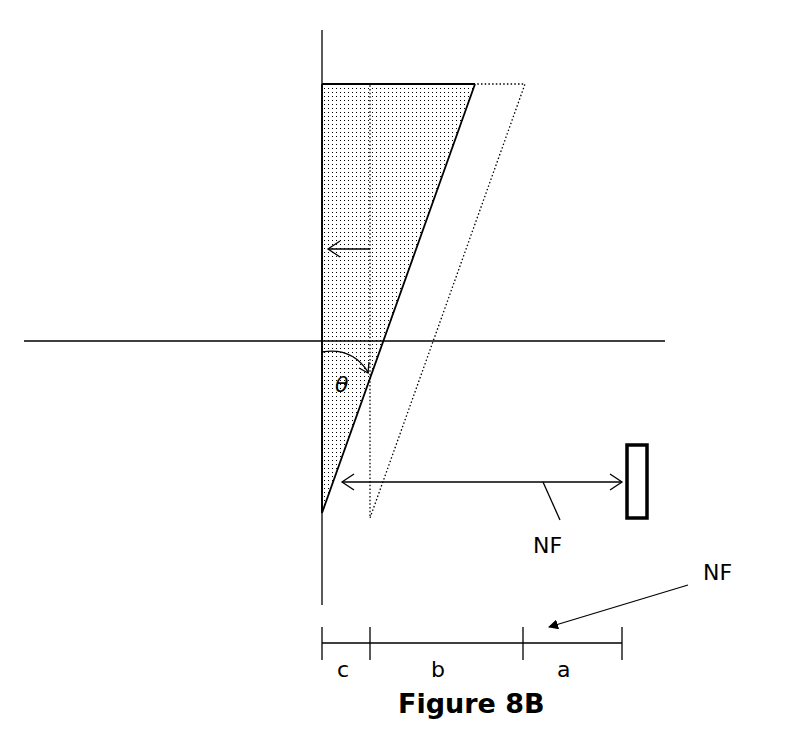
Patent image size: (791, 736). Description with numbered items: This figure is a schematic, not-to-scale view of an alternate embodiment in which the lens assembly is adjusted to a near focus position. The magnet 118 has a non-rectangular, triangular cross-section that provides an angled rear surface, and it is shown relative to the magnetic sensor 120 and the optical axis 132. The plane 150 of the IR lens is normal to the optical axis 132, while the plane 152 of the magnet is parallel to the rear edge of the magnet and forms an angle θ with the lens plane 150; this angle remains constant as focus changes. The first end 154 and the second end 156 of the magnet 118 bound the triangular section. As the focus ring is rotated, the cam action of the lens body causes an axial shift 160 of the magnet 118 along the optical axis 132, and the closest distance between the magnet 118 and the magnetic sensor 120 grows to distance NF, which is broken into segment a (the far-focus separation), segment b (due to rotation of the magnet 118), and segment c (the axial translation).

The magnet 118 is at (349, 163).
The magnetic sensor 120 is at (647, 477).
The optical axis 132 is at (127, 341).
The plane of the IR lens 150 is at (322, 223).
The plane of the magnet 152 is at (428, 220).
The first end of the magnet 154 is at (322, 513).
The second end of the magnet 156 is at (475, 84).
The axial shift 160 is at (345, 251).